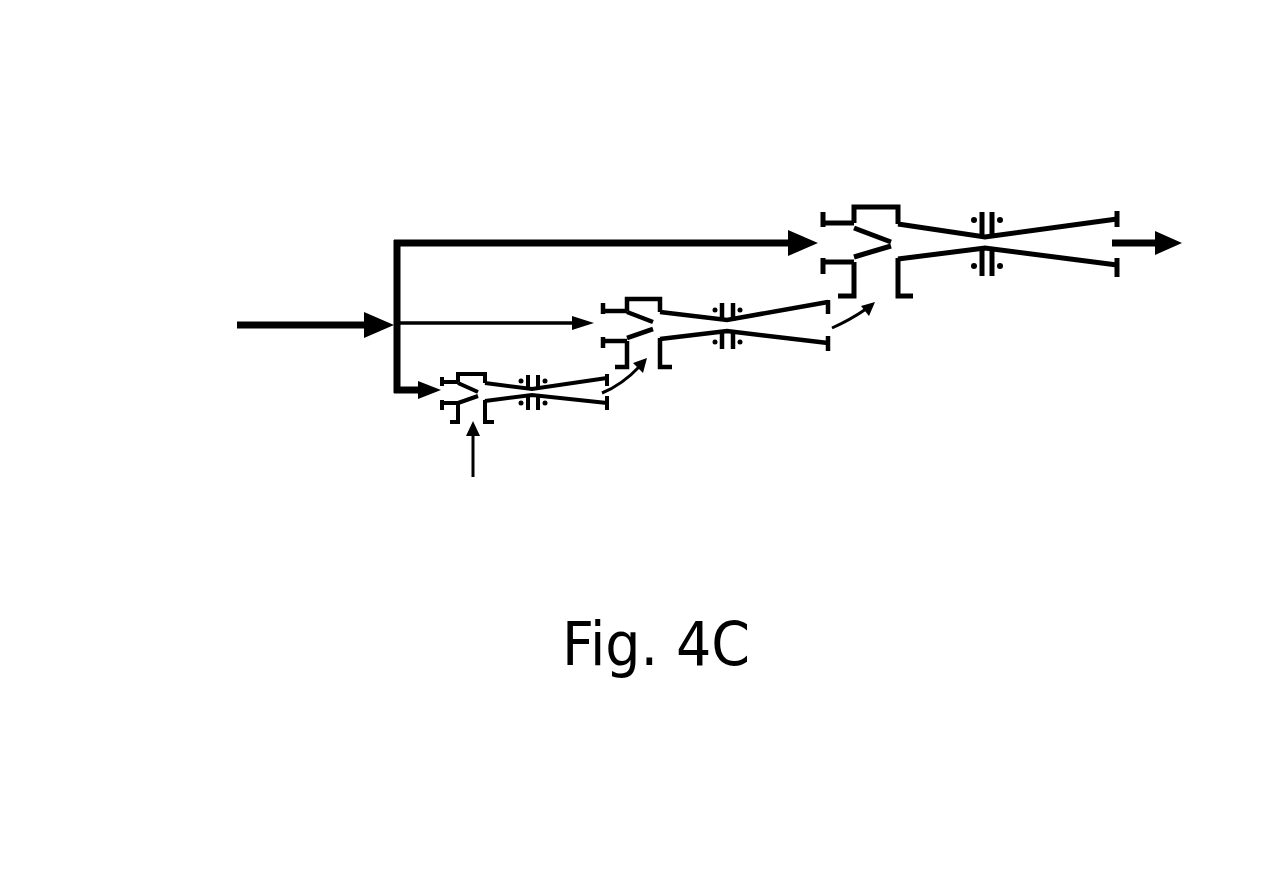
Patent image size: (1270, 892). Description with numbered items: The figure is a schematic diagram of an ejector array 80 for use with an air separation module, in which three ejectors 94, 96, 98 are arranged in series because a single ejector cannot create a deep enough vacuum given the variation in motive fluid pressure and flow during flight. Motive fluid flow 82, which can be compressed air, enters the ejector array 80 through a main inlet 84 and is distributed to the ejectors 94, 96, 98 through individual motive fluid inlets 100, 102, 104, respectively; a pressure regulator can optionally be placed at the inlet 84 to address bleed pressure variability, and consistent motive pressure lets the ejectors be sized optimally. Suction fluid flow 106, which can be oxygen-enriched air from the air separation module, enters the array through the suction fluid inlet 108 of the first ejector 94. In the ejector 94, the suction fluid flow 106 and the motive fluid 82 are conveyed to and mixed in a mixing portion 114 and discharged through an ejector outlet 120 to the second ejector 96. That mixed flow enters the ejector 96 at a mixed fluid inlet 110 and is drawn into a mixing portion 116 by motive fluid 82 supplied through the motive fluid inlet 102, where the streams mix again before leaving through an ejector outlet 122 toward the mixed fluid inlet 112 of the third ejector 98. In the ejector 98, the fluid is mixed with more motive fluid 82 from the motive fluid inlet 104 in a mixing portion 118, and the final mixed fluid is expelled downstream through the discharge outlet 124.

The ejector array 80 is at (1216, 112).
The motive fluid flow 82 is at (303, 328).
The main inlet 84 is at (237, 327).
The ejector 94 is at (483, 452).
The ejector 96 is at (668, 367).
The ejector 98 is at (927, 216).
The motive fluid inlet 100 is at (447, 392).
The motive fluid inlet 102 is at (608, 323).
The motive fluid inlet 104 is at (820, 228).
The suction fluid flow 106 is at (473, 464).
The suction fluid inlet 108 is at (472, 407).
The mixed fluid inlet 110 is at (648, 350).
The mixed fluid inlet 112 is at (883, 278).
The mixing portion 114 is at (515, 393).
The mixing portion 116 is at (703, 323).
The mixing portion 118 is at (953, 228).
The ejector outlet 120 is at (602, 392).
The ejector outlet 122 is at (823, 325).
The discharge outlet 124 is at (1132, 247).